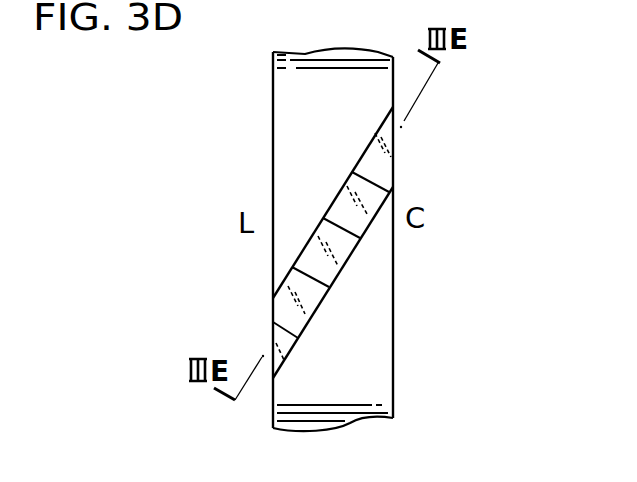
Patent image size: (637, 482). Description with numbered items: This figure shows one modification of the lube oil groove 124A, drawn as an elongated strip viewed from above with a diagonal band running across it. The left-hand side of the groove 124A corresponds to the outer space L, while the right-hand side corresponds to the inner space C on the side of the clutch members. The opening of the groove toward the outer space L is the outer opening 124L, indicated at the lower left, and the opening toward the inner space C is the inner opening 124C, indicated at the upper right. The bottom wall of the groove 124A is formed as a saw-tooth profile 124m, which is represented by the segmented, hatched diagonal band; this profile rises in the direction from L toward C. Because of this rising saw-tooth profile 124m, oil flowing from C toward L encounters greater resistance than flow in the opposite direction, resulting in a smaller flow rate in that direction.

The groove 124A is at (390, 158).
The inner opening 124C is at (395, 161).
The outer opening 124L is at (273, 378).
The saw-tooth profile 124m is at (347, 233).